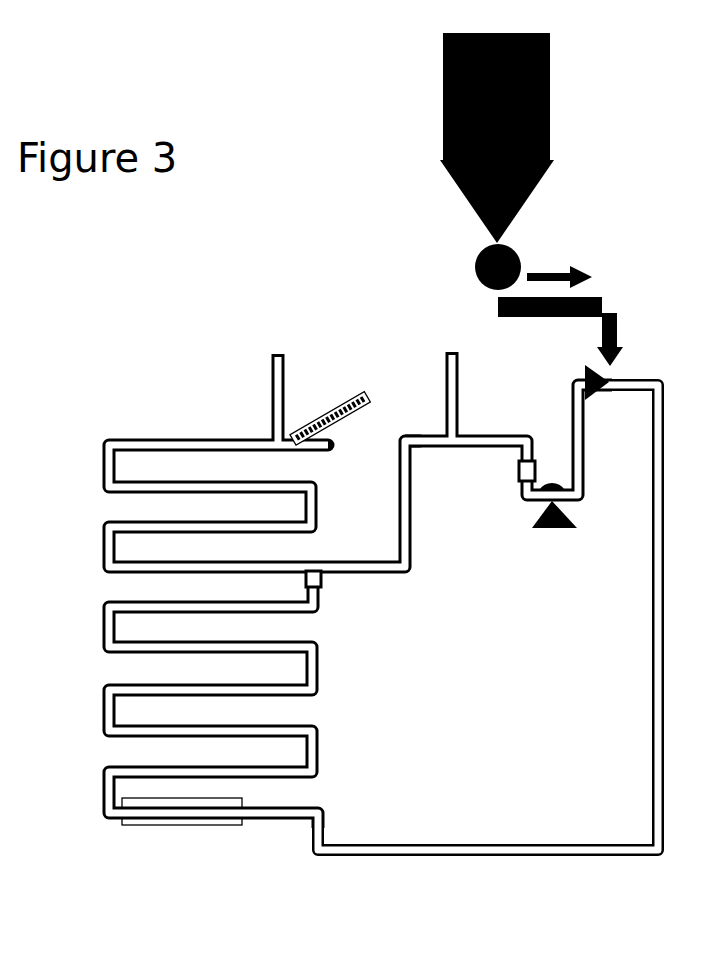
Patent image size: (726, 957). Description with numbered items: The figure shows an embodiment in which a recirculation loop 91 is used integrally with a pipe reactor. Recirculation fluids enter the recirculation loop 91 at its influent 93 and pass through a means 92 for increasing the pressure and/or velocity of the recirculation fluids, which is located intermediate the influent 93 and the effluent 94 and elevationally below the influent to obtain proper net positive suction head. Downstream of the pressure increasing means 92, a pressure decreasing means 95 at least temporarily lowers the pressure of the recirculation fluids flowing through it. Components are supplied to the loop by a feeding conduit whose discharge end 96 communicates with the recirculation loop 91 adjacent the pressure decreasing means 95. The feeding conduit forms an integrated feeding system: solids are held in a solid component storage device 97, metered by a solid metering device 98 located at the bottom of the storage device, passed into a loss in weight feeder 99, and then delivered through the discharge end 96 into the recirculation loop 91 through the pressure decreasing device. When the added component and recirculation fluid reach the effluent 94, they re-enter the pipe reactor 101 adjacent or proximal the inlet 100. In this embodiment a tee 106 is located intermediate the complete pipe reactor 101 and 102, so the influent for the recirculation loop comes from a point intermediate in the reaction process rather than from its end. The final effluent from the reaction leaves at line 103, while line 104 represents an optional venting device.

The recirculation loop 91 is at (629, 617).
The means for increasing pressure and/or velocity 92 is at (554, 525).
The influent 93 is at (517, 462).
The effluent 94 is at (595, 440).
The pressure decreasing means 95 is at (572, 371).
The discharge end of feeding conduit 96 is at (590, 331).
The solid component storage device 97 is at (454, 138).
The solid metering device 98 is at (469, 267).
The loss in weight feeder 99 is at (607, 281).
The inlet 100 is at (386, 850).
The pipe reactor 101 is at (242, 697).
The pipe reactor 102 is at (264, 504).
The line 103 is at (355, 393).
The line 104 is at (285, 377).
The tee 106 is at (334, 584).